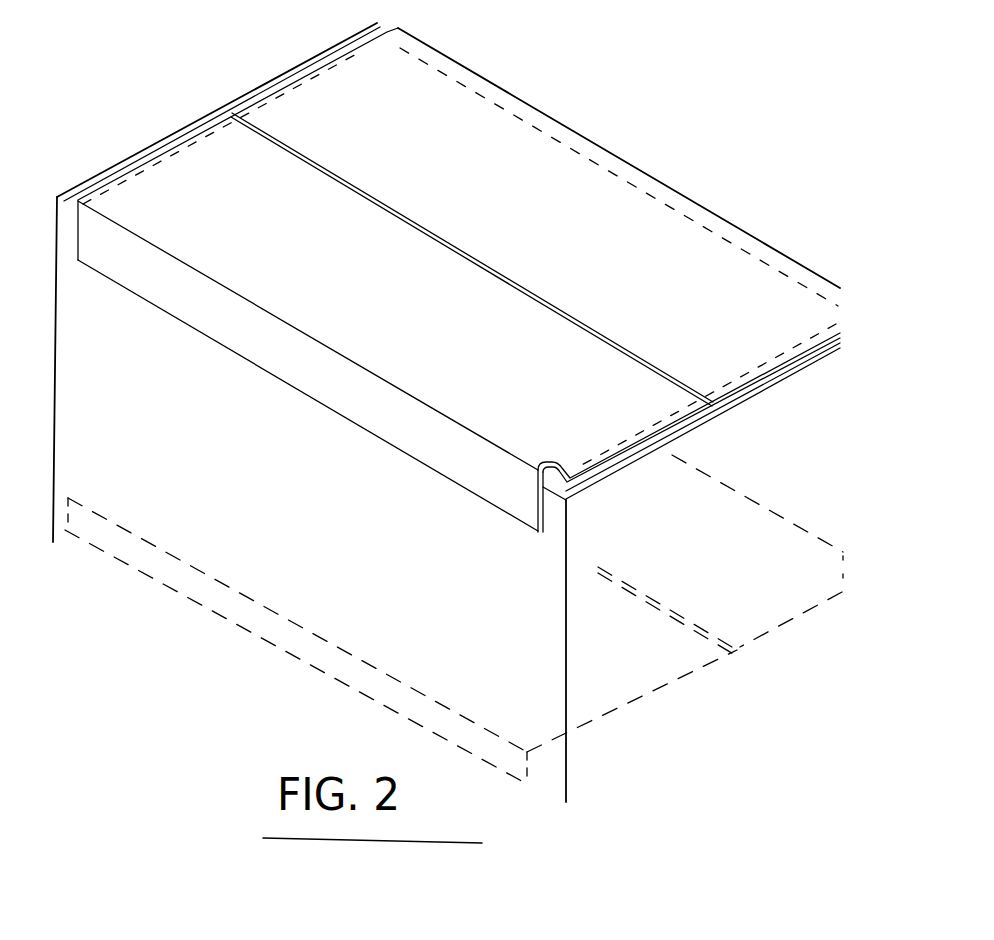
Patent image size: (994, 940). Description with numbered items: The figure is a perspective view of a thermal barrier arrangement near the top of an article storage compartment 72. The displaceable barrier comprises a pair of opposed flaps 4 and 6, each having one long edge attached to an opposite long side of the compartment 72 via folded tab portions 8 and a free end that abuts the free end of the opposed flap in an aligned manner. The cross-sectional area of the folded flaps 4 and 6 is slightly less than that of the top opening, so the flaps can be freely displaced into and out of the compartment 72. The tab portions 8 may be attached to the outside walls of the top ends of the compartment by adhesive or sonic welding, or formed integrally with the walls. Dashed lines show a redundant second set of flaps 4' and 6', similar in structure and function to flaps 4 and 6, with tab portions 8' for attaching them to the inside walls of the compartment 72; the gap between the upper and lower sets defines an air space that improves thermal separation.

The storage compartment 72 is at (446, 412).
The flap 4 is at (459, 281).
The flap 6 is at (452, 259).
The folded tab portion 8 is at (310, 410).
The redundant flap 4' is at (401, 392).
The redundant flap 6' is at (757, 576).
The tab portion of redundant flap 8' is at (305, 658).